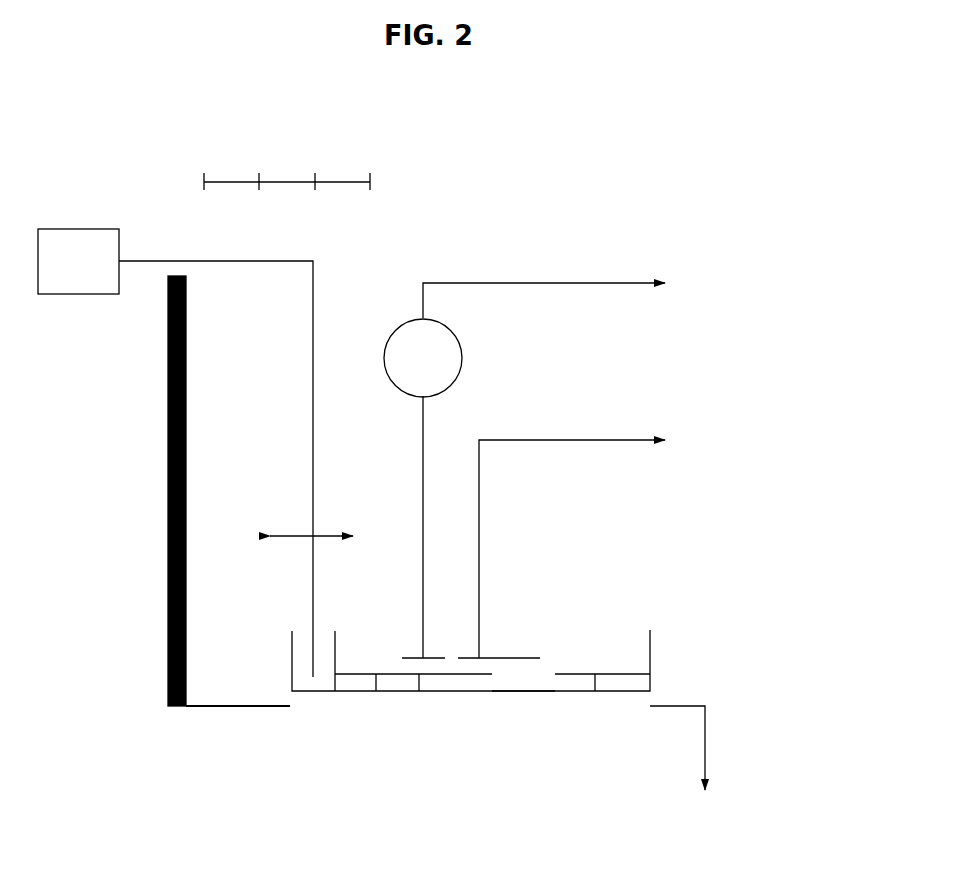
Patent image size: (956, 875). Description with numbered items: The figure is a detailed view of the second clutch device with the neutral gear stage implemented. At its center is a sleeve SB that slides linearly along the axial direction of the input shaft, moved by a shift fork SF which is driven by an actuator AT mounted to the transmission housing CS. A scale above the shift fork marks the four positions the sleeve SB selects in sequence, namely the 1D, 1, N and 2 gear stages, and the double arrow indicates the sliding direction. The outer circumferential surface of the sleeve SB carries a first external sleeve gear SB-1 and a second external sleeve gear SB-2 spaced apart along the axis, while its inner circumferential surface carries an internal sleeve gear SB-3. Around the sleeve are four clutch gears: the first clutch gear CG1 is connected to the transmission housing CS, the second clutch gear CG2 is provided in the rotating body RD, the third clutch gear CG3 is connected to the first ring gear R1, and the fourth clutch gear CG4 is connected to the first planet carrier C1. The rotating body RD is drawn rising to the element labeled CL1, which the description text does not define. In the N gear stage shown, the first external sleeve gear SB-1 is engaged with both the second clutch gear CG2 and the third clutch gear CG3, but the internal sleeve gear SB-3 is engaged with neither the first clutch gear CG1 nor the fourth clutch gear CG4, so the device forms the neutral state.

The actuator AT is at (80, 229).
The shift fork SF is at (313, 402).
The transmission housing CS is at (168, 530).
The first clutch gear CG1 is at (229, 706).
The second clutch gear CG2 is at (412, 656).
The third clutch gear CG3 is at (505, 656).
The fourth clutch gear CG4 is at (677, 706).
The sleeve SB is at (653, 630).
The first external sleeve gear SB-1 is at (376, 691).
The second external sleeve gear SB-2 is at (578, 672).
The internal sleeve gear SB-3 is at (556, 692).
The rotating body RD is at (424, 427).
The first clock CL1 is at (423, 358).
The first planet carrier C1 is at (571, 547).
The first ring gear R1 is at (593, 542).
The 1D gear stage 1D is at (279, 196).
The 1 gear stage 1 is at (259, 196).
The N gear stage N is at (315, 196).
The 2 gear stage 2 is at (369, 196).